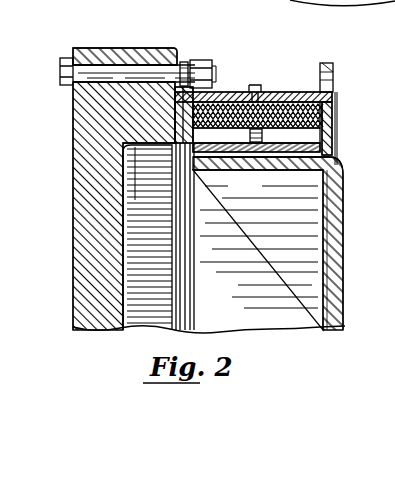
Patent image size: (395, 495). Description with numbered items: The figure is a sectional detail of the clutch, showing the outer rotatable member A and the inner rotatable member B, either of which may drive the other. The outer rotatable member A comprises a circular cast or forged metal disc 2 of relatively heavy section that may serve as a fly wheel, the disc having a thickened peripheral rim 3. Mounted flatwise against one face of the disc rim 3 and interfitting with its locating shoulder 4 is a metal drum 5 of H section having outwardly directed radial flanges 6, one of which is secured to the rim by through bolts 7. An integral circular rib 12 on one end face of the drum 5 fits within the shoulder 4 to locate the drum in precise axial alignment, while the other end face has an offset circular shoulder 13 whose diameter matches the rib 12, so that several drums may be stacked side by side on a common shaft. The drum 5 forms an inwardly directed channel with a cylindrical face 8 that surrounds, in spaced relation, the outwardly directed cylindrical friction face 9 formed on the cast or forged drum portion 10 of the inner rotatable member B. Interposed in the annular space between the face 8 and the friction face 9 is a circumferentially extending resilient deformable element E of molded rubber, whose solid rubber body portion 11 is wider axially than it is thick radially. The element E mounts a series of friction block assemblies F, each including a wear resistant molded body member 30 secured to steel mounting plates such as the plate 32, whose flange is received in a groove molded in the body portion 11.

The disc 2 is at (73, 247).
The peripheral rim 3 is at (100, 48).
The locating shoulder 4 is at (196, 93).
The drum 5 is at (286, 92).
The radial flanges 6 is at (183, 62).
The through bolts 7 is at (212, 87).
The cylindrical face 8 is at (308, 108).
The friction face 9 is at (225, 166).
The drum portion 10 is at (243, 152).
The body portion 11 is at (292, 229).
The circular rib 12 is at (173, 97).
The circular shoulder 13 is at (337, 100).
The body member 30 is at (296, 152).
The mounting plate 32 is at (386, 251).
The outer rotatable member A is at (73, 163).
The inner rotatable member B is at (343, 216).
The resilient deformable element E is at (337, 108).
The friction block assemblies F is at (337, 146).